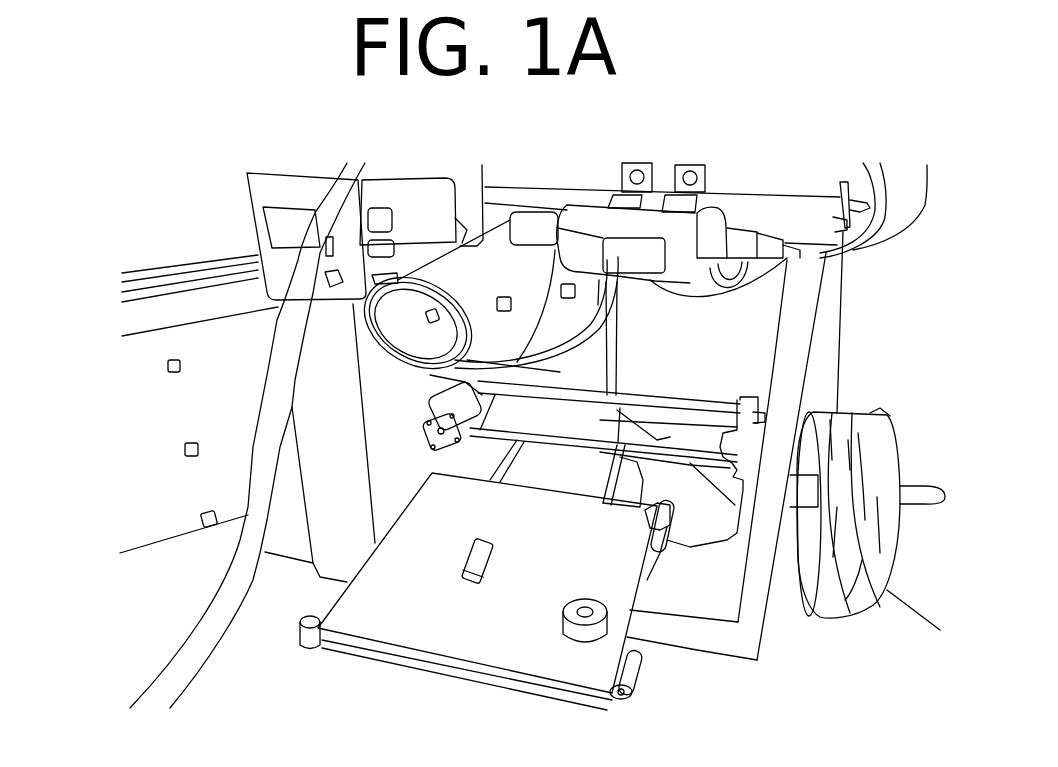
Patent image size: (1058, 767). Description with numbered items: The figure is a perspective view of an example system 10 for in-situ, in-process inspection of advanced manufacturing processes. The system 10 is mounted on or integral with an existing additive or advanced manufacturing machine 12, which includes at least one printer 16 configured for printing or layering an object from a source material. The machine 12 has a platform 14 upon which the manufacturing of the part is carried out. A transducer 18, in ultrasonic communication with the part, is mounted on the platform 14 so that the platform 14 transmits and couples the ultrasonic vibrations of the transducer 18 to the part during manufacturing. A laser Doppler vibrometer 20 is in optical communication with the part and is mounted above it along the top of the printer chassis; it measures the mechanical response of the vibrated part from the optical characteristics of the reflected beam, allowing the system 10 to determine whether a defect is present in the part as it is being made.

The system 10 is at (110, 428).
The advanced manufacturing machine 12 is at (258, 304).
The platform 14 is at (387, 610).
The printer 16 is at (427, 437).
The transducer 18 is at (580, 633).
The laser Doppler vibrometer 20 is at (697, 242).